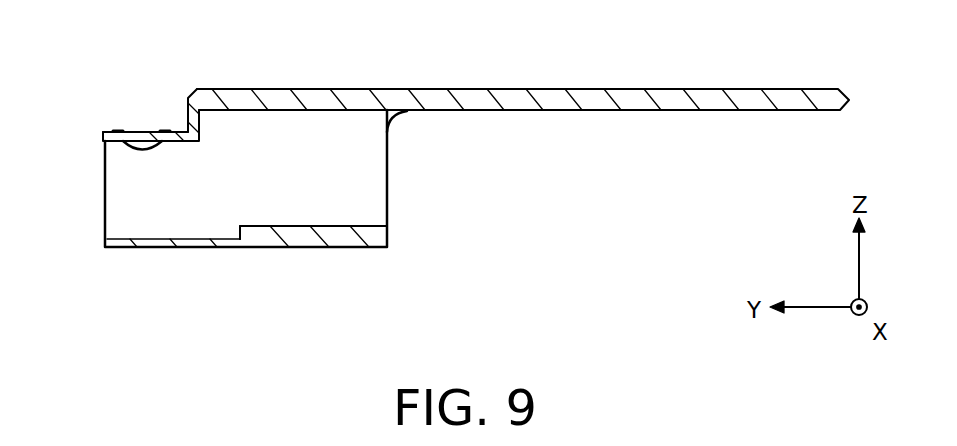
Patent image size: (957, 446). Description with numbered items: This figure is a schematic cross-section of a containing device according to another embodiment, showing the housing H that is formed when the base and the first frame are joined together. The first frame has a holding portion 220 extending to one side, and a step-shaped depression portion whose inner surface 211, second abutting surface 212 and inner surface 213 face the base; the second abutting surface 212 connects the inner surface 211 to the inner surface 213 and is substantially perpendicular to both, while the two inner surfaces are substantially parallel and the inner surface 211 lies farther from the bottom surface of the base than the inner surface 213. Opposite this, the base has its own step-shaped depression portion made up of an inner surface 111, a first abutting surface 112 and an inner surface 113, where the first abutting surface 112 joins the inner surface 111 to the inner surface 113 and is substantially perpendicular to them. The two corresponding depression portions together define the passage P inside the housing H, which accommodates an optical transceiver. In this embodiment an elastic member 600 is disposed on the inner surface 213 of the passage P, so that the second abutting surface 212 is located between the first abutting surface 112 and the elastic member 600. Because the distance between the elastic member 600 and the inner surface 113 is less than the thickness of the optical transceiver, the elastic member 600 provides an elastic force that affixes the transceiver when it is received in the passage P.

The holding portion 220 is at (803, 90).
The inner surface 211 is at (333, 112).
The second abutting surface 212 is at (200, 131).
The inner surface 213 is at (178, 141).
The elastic member 600 is at (145, 148).
The inner surface 113 is at (148, 240).
The first abutting surface 112 is at (238, 229).
The inner surface 111 is at (338, 226).
The passage P is at (370, 183).
The housing H is at (490, 77).